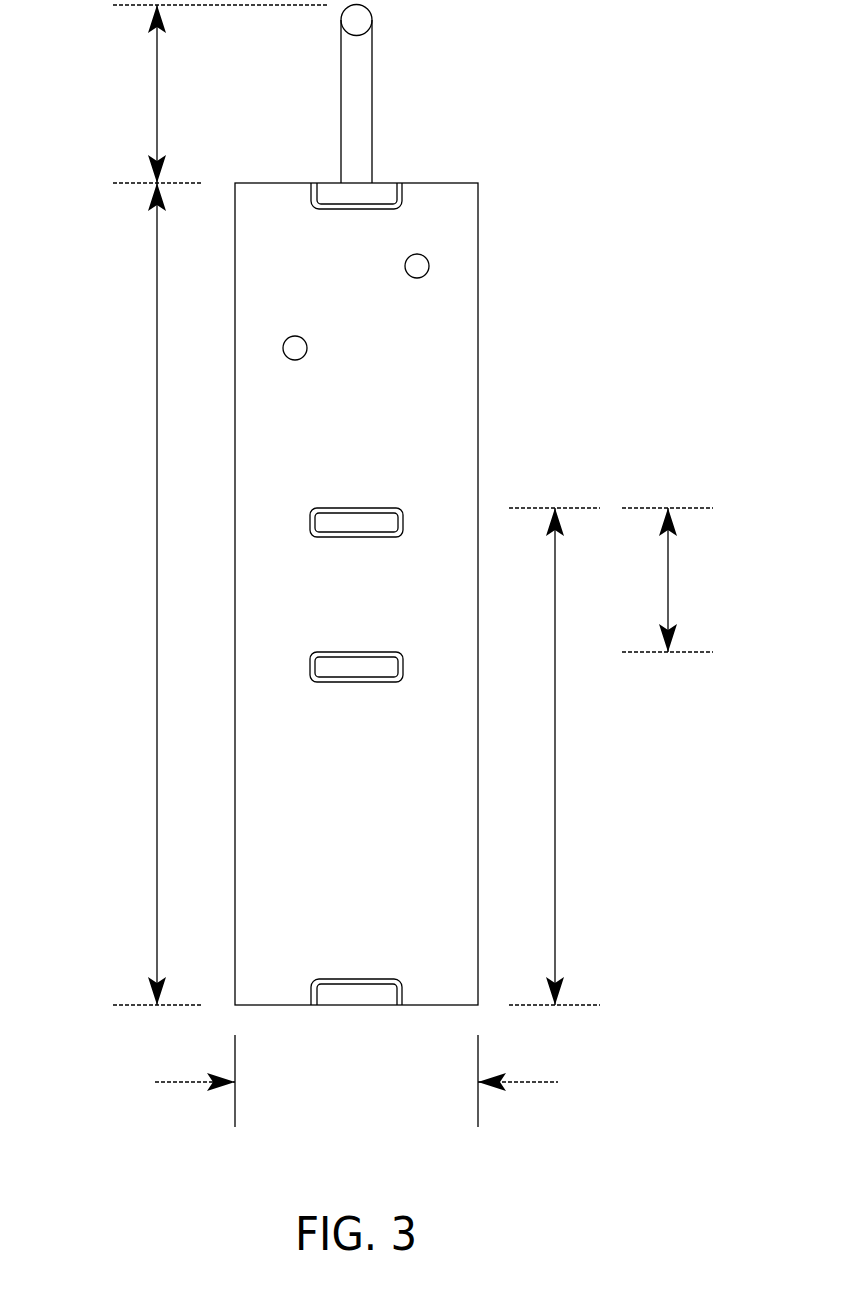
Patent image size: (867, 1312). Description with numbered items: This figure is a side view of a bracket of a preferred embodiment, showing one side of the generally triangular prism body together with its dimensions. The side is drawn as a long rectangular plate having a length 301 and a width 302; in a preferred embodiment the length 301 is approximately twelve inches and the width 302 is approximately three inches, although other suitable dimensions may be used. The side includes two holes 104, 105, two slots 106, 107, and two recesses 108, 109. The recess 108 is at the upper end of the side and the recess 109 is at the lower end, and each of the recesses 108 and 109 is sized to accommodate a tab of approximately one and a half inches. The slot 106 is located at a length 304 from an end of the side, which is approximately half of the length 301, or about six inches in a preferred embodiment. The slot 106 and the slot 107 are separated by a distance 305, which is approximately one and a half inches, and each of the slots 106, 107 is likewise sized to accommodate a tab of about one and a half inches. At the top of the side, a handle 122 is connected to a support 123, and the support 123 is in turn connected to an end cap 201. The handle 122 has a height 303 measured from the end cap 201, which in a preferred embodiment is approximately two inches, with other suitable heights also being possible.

The end cap 201 is at (437, 182).
The handle 122 is at (357, 20).
The support 123 is at (373, 72).
The hole 104 is at (429, 266).
The hole 105 is at (307, 348).
The slot 106 is at (359, 506).
The slot 107 is at (358, 684).
The recess 108 is at (352, 210).
The recess 109 is at (360, 977).
The length 301 is at (157, 509).
The width 302 is at (532, 1085).
The height 303 is at (157, 89).
The length 304 is at (557, 757).
The distance 305 is at (669, 582).